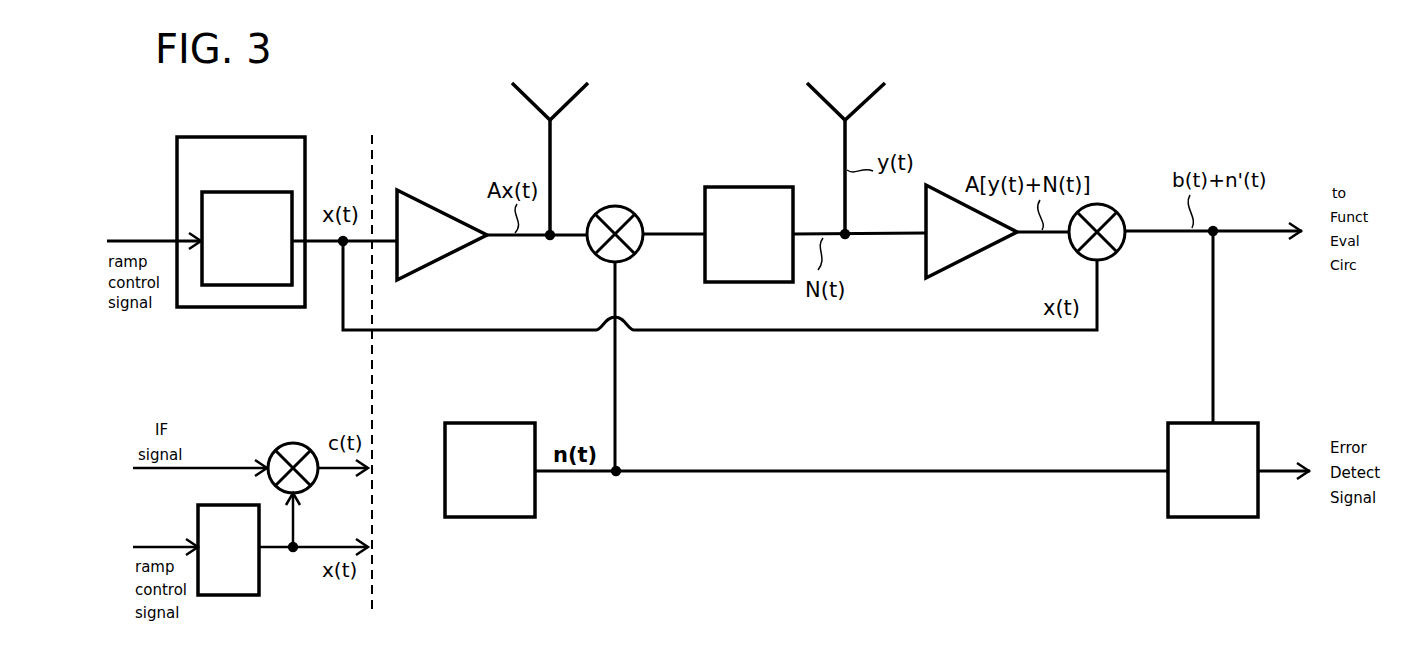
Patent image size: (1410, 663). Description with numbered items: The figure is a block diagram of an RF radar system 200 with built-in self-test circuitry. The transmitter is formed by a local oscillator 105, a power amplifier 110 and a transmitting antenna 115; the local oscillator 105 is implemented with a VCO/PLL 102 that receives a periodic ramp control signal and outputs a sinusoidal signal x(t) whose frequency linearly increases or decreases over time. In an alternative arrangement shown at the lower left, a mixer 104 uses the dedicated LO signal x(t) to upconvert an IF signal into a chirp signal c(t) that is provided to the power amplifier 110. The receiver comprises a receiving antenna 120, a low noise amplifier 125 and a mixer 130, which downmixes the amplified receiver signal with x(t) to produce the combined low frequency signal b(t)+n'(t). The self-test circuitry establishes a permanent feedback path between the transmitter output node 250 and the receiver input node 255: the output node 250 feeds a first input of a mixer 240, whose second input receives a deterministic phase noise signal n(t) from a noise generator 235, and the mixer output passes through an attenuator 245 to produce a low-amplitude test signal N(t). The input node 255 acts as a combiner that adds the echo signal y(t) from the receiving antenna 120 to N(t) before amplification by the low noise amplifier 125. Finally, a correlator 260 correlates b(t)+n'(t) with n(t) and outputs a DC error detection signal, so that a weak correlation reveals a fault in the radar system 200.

The RF radar system 200 is at (1236, 103).
The local oscillator 105 is at (241, 366).
The VCO/PLL 102 is at (247, 238).
The power amplifier 110 is at (442, 240).
The transmitting antenna 115 is at (561, 159).
The output node 250 is at (553, 240).
The mixer 240 is at (632, 248).
The attenuator 245 is at (749, 234).
The receiving antenna 120 is at (854, 158).
The input node 255 is at (848, 238).
The low noise amplifier 125 is at (971, 234).
The mixer 130 is at (1114, 243).
The noise generator 235 is at (490, 470).
The correlator 260 is at (1213, 470).
The mixer 104 is at (283, 455).